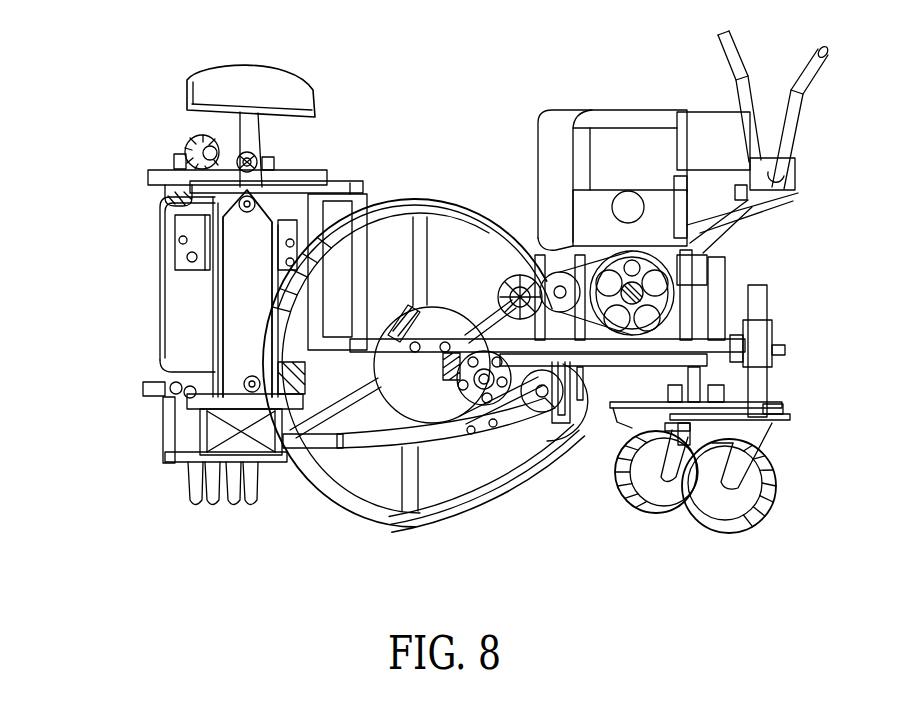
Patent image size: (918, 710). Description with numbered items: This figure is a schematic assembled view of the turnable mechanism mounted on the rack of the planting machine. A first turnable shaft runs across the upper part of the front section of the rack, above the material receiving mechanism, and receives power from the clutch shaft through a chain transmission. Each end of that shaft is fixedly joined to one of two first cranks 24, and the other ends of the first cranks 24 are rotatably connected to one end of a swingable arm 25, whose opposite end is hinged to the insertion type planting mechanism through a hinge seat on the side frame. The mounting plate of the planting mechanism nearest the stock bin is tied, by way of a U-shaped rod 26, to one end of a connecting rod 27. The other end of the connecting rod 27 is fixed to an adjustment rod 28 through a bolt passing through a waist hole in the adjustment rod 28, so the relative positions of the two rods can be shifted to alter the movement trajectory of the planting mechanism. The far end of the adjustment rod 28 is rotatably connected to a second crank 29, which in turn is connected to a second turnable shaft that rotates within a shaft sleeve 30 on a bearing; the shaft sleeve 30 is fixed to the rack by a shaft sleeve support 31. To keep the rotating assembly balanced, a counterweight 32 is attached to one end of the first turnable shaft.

The first crank 24 is at (172, 157).
The swingable arm 25 is at (243, 302).
The U-shaped rod 26 is at (317, 446).
The connecting rod 27 is at (384, 430).
The adjustment rod 28 is at (510, 405).
The second crank 29 is at (548, 400).
The shaft sleeve 30 is at (568, 395).
The shaft sleeve support 31 is at (645, 458).
The counterweight 32 is at (243, 92).